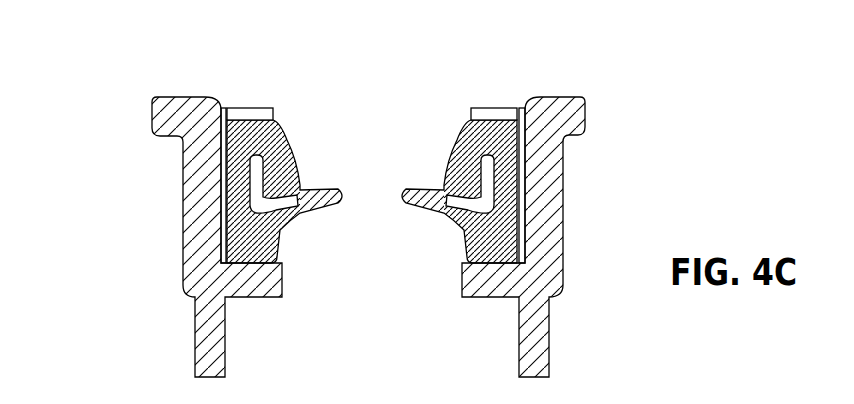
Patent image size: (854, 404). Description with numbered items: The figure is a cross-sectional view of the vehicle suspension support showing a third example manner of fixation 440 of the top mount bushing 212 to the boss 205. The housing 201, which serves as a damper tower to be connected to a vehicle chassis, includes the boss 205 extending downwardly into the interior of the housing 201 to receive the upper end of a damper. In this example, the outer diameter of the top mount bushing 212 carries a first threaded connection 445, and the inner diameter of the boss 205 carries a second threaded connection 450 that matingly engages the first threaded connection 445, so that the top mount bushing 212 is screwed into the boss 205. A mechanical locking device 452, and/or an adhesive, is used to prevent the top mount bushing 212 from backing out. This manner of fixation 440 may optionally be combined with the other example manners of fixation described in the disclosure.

The third example manner of fixation 440 is at (127, 265).
The housing 201 is at (563, 97).
The boss 205 is at (563, 247).
The top mount bushing 212 is at (284, 133).
The first threaded connection 445 is at (222, 149).
The second threaded connection 450 is at (222, 181).
The mechanical locking device 452 is at (262, 108).